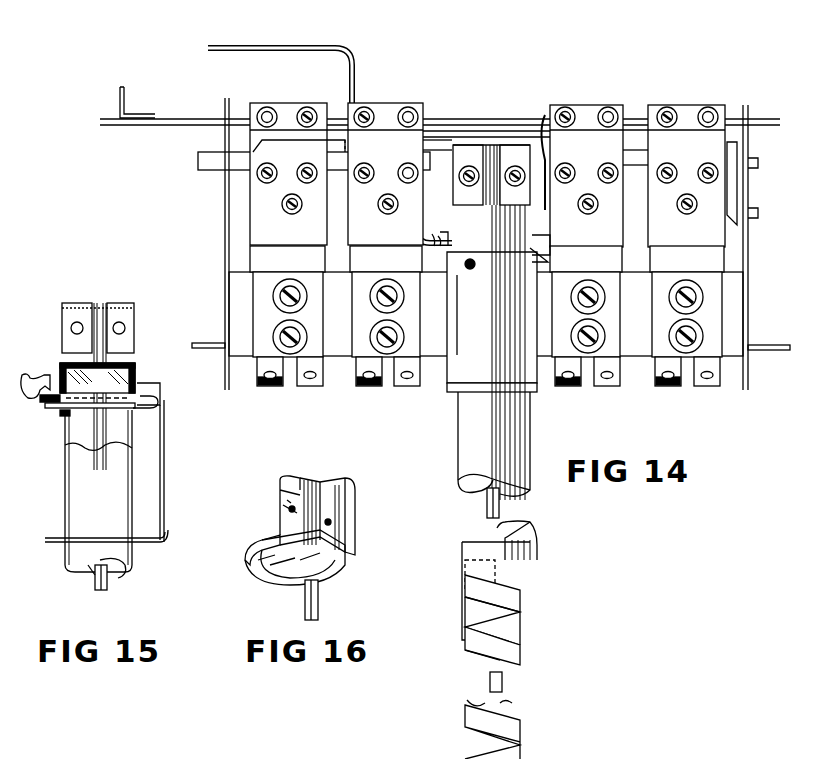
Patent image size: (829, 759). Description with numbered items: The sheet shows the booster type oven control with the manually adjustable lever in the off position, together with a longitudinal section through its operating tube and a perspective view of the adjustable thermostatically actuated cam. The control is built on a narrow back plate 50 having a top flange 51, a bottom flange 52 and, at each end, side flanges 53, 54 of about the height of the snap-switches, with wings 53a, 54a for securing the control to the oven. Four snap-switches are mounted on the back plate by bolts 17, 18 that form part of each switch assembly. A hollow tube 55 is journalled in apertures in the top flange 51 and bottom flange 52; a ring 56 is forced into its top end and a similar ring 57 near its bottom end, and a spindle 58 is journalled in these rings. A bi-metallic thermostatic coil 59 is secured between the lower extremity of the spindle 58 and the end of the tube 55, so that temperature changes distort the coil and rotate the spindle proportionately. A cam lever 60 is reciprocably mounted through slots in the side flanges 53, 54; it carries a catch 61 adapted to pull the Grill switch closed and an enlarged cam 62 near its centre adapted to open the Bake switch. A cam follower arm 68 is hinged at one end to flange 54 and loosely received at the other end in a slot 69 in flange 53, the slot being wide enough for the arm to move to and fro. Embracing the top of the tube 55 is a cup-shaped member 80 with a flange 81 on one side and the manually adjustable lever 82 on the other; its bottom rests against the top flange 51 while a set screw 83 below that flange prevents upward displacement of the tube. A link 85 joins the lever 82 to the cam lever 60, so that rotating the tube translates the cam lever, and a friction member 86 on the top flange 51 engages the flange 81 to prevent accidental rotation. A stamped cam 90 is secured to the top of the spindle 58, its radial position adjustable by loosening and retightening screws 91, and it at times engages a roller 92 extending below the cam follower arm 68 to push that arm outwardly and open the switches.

In FIG. 14, the bolt 17 is at (692, 292).
In FIG. 14, the bolt 18 is at (672, 330).
In FIG. 14, the back plate 50 is at (243, 290).
In FIG. 15, the back plate 50 is at (165, 450).
In FIG. 14, the top flange 51 is at (500, 262).
In FIG. 15, the top flange 51 is at (52, 410).
In FIG. 14, the bottom flange 52 is at (488, 385).
In FIG. 15, the bottom flange 52 is at (56, 538).
In FIG. 14, the side flange 53 is at (224, 228).
In FIG. 14, the wing 53a is at (200, 343).
In FIG. 14, the side flange 54 is at (749, 233).
In FIG. 14, the wing 54a is at (762, 345).
In FIG. 14, the hollow tube 55 is at (472, 420).
In FIG. 15, the hollow tube 55 is at (122, 470).
In FIG. 15, the ring 56 is at (76, 368).
In FIG. 14, the ring 57 is at (465, 560).
In FIG. 14, the spindle 58 is at (485, 512).
In FIG. 15, the spindle 58 is at (112, 580).
In FIG. 16, the spindle 58 is at (320, 590).
In FIG. 14, the bi-metallic thermostatic coil 59 is at (522, 662).
In FIG. 14, the cam lever 60 is at (210, 119).
In FIG. 14, the catch 61 is at (137, 112).
In FIG. 14, the cam 62 is at (740, 188).
In FIG. 14, the cam follower arm 68 is at (348, 182).
In FIG. 14, the slot 69 is at (222, 174).
In FIG. 14, the cup-shaped member 80 is at (463, 217).
In FIG. 15, the cup-shaped member 80 is at (133, 372).
In FIG. 14, the flange 81 is at (537, 248).
In FIG. 15, the flange 81 is at (160, 408).
In FIG. 14, the manually adjustable lever 82 is at (315, 52).
In FIG. 15, the manually adjustable lever 82 is at (32, 372).
In FIG. 14, the set screw 83 is at (466, 270).
In FIG. 15, the set screw 83 is at (62, 418).
In FIG. 14, the link 85 is at (478, 132).
In FIG. 14, the friction member 86 is at (538, 235).
In FIG. 15, the friction member 86 is at (158, 388).
In FIG. 14, the cam 90 is at (510, 150).
In FIG. 15, the cam 90 is at (128, 316).
In FIG. 16, the cam 90 is at (258, 552).
In FIG. 16, the screw 91 is at (330, 520).
In FIG. 14, the roller 92 is at (545, 115).